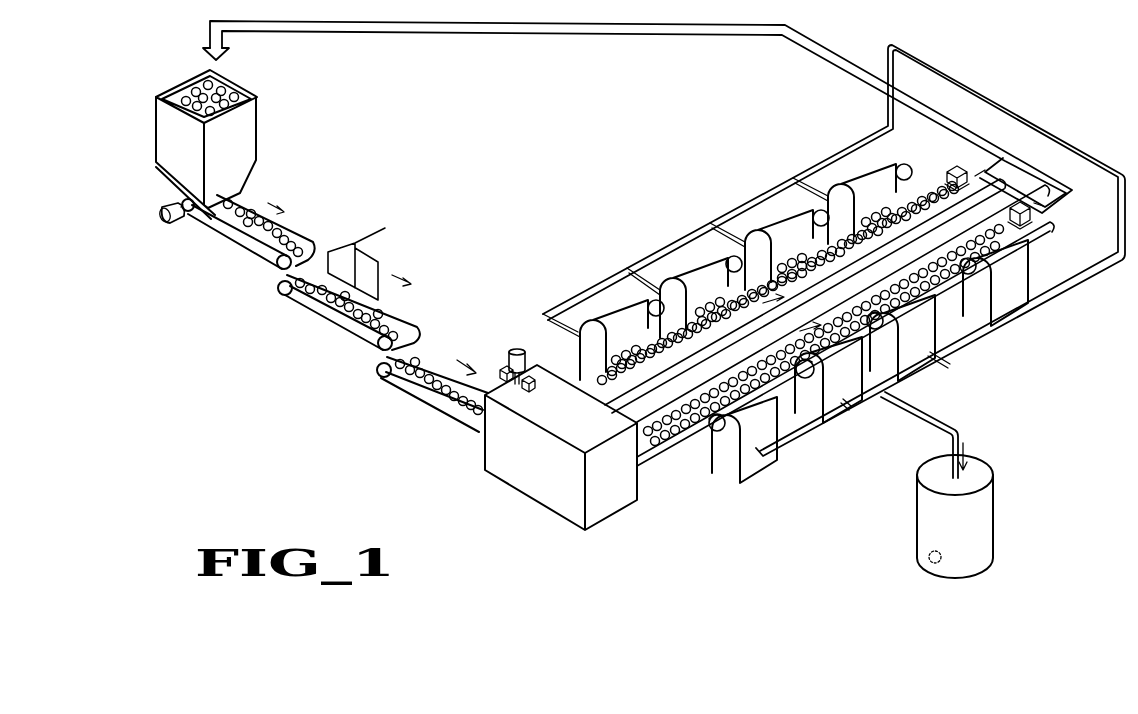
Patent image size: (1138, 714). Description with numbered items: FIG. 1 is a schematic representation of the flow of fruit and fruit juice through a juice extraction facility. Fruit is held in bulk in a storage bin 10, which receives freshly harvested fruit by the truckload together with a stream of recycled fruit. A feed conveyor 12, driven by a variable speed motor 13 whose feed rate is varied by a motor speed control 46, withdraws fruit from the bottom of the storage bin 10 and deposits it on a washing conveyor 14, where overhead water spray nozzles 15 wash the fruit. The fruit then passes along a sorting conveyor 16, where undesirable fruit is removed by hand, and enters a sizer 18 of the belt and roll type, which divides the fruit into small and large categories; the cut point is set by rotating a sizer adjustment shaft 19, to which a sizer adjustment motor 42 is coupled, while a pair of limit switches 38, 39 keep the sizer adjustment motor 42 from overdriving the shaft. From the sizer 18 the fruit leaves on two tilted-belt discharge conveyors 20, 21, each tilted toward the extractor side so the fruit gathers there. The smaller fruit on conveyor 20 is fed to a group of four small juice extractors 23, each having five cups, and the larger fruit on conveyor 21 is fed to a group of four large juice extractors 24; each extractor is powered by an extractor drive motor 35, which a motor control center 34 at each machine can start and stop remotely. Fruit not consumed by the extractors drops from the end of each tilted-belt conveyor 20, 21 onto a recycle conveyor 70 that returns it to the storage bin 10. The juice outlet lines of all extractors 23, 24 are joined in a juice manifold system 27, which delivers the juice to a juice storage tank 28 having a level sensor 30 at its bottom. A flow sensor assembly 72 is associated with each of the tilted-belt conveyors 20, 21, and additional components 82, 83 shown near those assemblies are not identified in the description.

The storage bin 10 is at (220, 151).
The feed conveyor 12 is at (224, 232).
The variable speed motor 13 is at (183, 201).
The washing conveyor 14 is at (324, 316).
The overhead water spray nozzles 15 is at (377, 295).
The sorting conveyor 16 is at (415, 392).
The sizer 18 is at (521, 462).
The sizer adjustment shaft 19 is at (517, 385).
The tilted-belt discharge conveyor 20 is at (608, 405).
The tilted-belt discharge conveyor 21 is at (632, 424).
The small juice extractor 23 is at (804, 311).
The large juice extractor 24 is at (780, 460).
The juice manifold system 27 is at (986, 95).
The juice storage tank 28 is at (943, 526).
The level sensor 30 is at (928, 565).
The motor control center 34 is at (731, 262).
The extractor drive motor 35 is at (842, 344).
The limit switch 38 is at (499, 369).
The limit switch 39 is at (537, 386).
The sizer adjustment motor 42 is at (519, 349).
The motor speed control 46 is at (158, 219).
The recycle conveyor 70 is at (808, 42).
The flow sensor assembly 72 is at (988, 175).
The nozzle block 82 is at (946, 179).
The nozzle head 83 is at (960, 168).